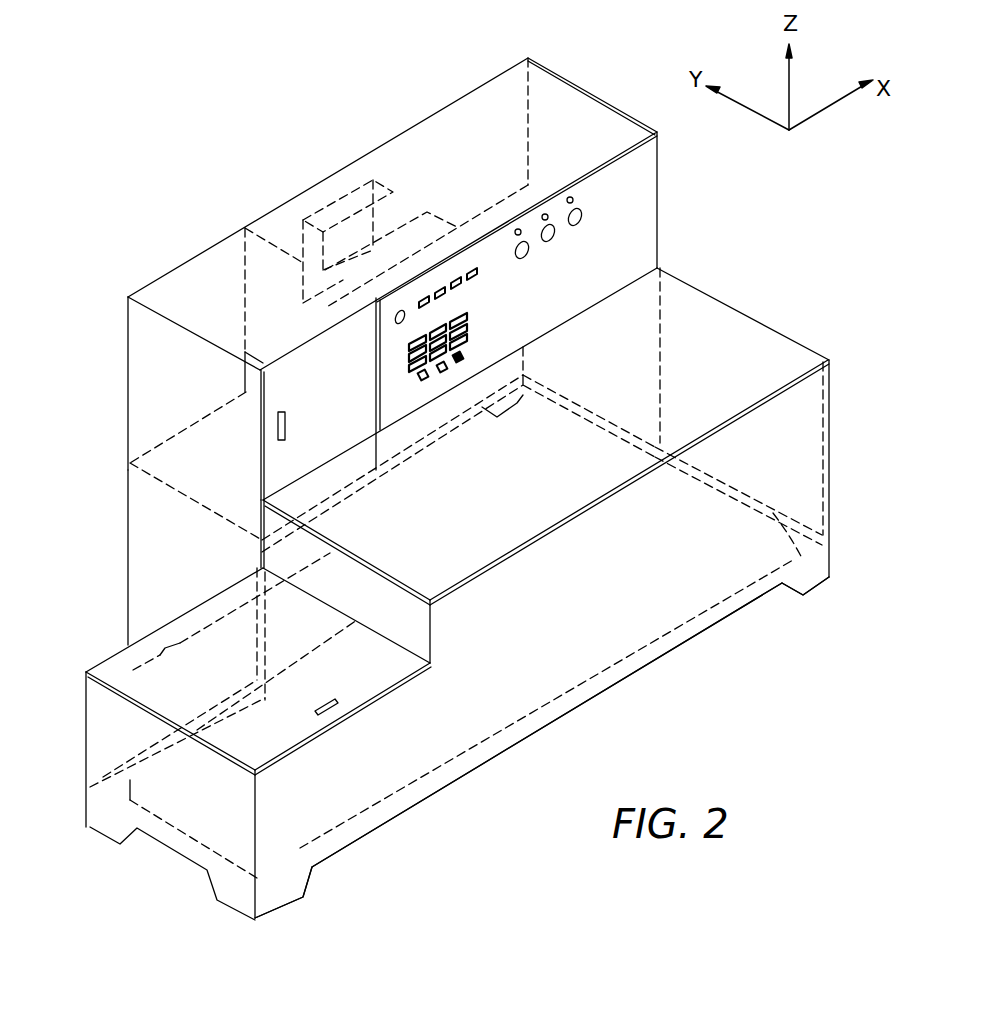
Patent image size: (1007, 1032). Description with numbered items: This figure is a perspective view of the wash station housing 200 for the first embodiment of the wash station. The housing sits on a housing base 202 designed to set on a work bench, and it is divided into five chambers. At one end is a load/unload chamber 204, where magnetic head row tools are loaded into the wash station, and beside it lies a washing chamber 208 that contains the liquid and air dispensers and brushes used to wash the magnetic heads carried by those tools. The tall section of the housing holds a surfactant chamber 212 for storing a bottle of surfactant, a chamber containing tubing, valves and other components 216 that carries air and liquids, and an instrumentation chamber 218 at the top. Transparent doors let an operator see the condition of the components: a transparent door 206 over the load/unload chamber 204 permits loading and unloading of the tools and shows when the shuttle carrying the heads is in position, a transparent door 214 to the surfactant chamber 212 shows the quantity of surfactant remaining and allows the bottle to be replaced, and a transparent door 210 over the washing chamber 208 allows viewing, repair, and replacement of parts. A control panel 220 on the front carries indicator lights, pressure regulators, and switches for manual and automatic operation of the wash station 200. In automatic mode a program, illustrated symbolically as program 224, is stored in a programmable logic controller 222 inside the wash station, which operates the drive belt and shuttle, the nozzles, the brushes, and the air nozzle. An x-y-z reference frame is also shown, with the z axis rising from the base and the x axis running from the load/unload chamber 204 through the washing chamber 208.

The wash station housing 200 is at (618, 712).
The housing base 202 is at (310, 878).
The load/unload chamber 204 is at (393, 767).
The transparent door 206 is at (328, 702).
The washing chamber 208 is at (682, 608).
The transparent door 210 is at (778, 353).
The surfactant chamber 212 is at (140, 412).
The transparent door 214 is at (287, 433).
The chamber containing tubing, valves and other components 216 is at (148, 547).
The instrumentation chamber 218 is at (464, 113).
The control panel 220 is at (637, 235).
The programmable logic controller 222 is at (427, 212).
The program 224 is at (393, 232).